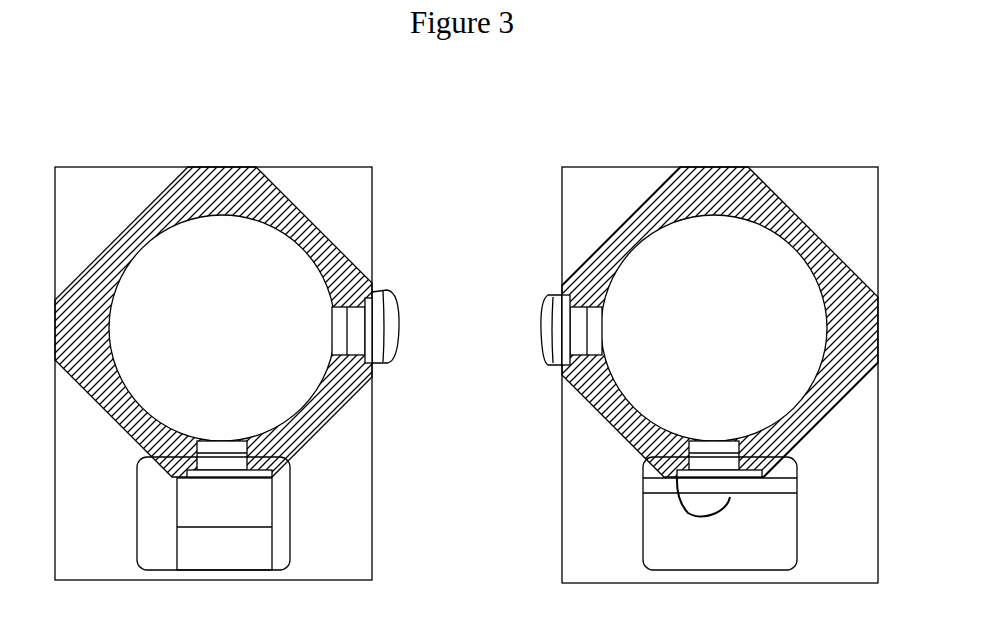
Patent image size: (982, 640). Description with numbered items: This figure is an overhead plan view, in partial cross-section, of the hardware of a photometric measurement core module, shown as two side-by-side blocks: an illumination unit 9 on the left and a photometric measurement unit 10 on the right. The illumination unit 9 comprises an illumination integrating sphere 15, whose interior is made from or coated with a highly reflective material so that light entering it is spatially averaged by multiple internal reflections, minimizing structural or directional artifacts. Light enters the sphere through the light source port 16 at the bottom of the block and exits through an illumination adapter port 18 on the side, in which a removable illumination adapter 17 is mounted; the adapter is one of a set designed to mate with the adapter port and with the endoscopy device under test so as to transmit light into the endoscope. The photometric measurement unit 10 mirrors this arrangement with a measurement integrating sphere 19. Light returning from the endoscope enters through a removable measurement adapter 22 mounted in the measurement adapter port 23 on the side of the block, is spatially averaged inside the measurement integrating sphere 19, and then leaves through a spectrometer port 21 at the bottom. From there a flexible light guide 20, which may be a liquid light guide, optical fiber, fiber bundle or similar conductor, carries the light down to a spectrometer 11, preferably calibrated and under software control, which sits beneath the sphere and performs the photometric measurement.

The illumination unit 9 is at (242, 342).
The photometric measurement unit 10 is at (714, 364).
The spectrometer 11 is at (797, 528).
The illumination integrating sphere 15 is at (275, 208).
The light source port 16 is at (237, 459).
The removable illumination adapter 17 is at (380, 293).
The illumination adapter port 18 is at (365, 346).
The measurement integrating sphere 19 is at (777, 220).
The light guide 20 is at (712, 513).
The spectrometer port 21 is at (727, 463).
The removable measurement adapter 22 is at (558, 296).
The measurement adapter port 23 is at (577, 345).